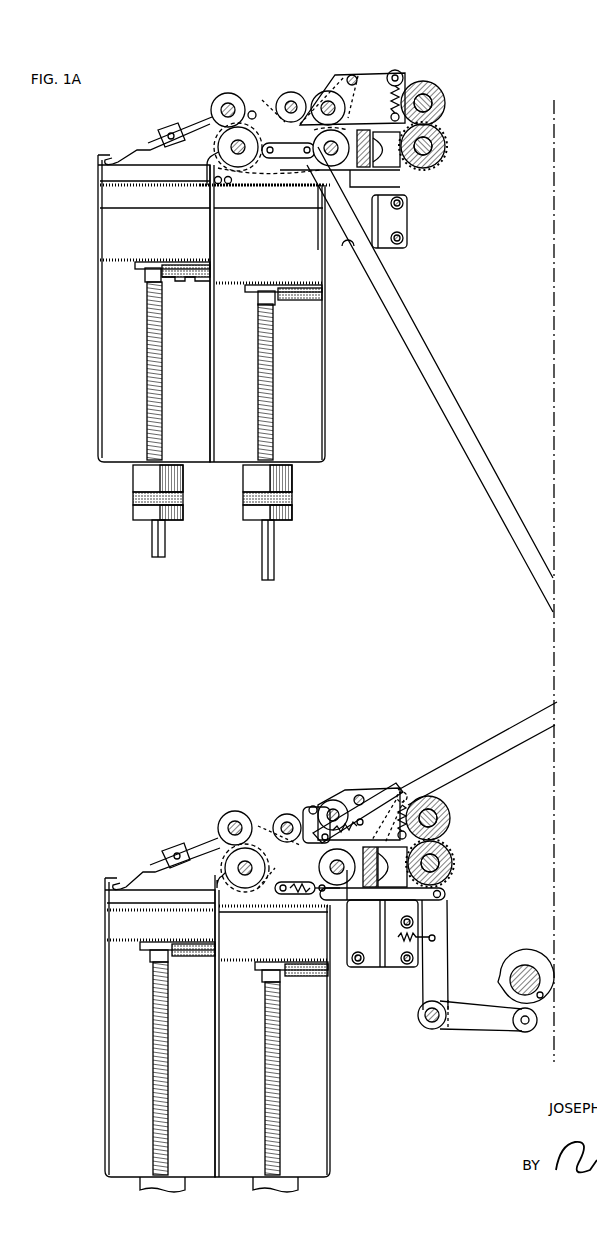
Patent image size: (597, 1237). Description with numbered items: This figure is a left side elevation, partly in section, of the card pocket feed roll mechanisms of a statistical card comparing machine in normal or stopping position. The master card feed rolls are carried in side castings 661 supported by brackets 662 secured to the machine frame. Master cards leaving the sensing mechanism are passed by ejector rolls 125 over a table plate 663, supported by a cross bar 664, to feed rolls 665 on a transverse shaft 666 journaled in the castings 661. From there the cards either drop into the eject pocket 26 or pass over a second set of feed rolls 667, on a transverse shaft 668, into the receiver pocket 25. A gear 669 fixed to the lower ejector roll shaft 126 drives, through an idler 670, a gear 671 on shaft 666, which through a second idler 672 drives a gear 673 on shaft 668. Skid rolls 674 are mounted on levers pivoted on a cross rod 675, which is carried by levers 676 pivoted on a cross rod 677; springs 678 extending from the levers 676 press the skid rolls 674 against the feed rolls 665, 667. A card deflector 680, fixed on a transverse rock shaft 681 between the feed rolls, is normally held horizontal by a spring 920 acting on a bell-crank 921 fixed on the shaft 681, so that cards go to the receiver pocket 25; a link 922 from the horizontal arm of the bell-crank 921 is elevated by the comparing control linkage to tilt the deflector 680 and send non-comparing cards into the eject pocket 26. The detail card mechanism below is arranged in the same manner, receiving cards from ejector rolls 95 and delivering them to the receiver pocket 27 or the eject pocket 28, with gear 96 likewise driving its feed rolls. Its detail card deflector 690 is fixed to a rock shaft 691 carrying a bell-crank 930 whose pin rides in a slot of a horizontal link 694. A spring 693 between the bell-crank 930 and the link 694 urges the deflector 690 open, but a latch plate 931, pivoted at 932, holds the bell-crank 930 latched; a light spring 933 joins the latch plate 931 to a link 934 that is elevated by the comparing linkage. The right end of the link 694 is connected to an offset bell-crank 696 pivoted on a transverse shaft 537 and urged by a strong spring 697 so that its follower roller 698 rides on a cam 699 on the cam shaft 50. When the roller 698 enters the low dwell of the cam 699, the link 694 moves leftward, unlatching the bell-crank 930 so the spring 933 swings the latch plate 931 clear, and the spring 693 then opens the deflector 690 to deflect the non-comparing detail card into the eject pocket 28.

The receiver pocket 25 is at (120, 248).
The eject pocket 26 is at (312, 258).
The receiver pocket 27 is at (120, 930).
The eject pocket 28 is at (318, 968).
The cam shaft 50 is at (515, 985).
The ejector rolls 95 is at (450, 845).
The gear 96 is at (450, 870).
The ejector rolls 125 is at (447, 123).
The lower ejector roll shaft 126 is at (447, 150).
The transverse shaft 537 is at (430, 1028).
The castings 661 is at (357, 74).
The brackets 662 is at (385, 237).
The table plate 663 is at (402, 163).
The cross bar 664 is at (390, 165).
The feed rolls 665 is at (350, 165).
The transverse shaft 666 is at (313, 178).
The feed rolls 667 is at (205, 190).
The transverse shaft 668 is at (233, 143).
The gear 669 is at (447, 135).
The idler 670 is at (418, 90).
The gear 671 is at (362, 75).
The second idler 672 is at (305, 120).
The gear 673 is at (270, 100).
The skid rolls 674 is at (218, 100).
The cross rod 675 is at (290, 93).
The levers 676 is at (370, 783).
The cross rod 677 is at (352, 75).
The springs 678 is at (410, 795).
The card deflector 680 is at (288, 118).
The transverse rock shaft 681 is at (260, 173).
The detail card deflector 690 is at (305, 815).
The transverse rock shaft 691 is at (267, 890).
The spring 693 is at (290, 908).
The horizontal link 694 is at (320, 910).
The offset bell-crank 696 is at (447, 930).
The spring 697 is at (416, 940).
The follower roller 698 is at (527, 1030).
The cam 699 is at (527, 955).
The spring 920 is at (250, 112).
The bell-crank 921 is at (215, 137).
The link 922 is at (420, 348).
The bell-crank 930 is at (215, 915).
The latch plate 931 is at (313, 805).
The pivot 932 is at (310, 808).
The light spring 933 is at (342, 828).
The link 934 is at (515, 735).